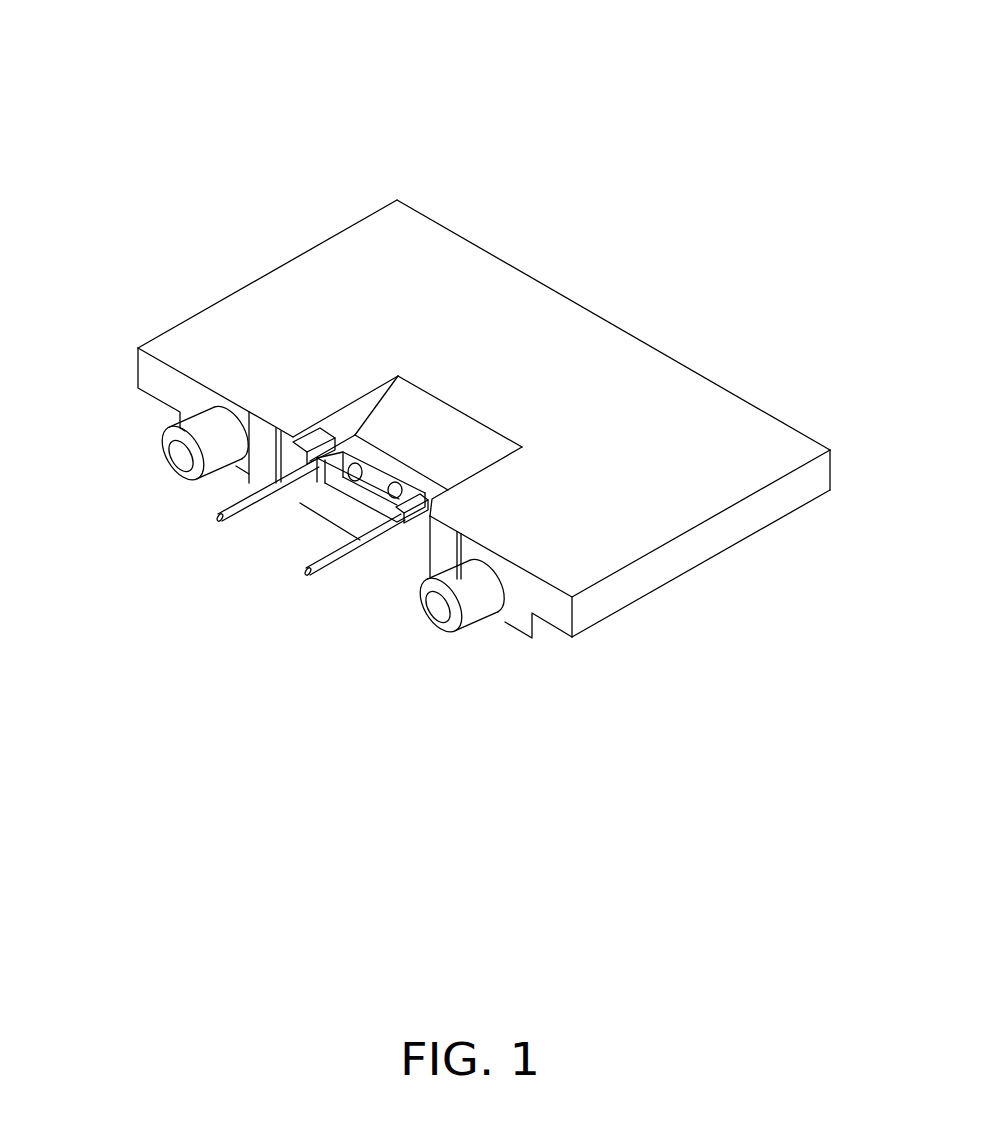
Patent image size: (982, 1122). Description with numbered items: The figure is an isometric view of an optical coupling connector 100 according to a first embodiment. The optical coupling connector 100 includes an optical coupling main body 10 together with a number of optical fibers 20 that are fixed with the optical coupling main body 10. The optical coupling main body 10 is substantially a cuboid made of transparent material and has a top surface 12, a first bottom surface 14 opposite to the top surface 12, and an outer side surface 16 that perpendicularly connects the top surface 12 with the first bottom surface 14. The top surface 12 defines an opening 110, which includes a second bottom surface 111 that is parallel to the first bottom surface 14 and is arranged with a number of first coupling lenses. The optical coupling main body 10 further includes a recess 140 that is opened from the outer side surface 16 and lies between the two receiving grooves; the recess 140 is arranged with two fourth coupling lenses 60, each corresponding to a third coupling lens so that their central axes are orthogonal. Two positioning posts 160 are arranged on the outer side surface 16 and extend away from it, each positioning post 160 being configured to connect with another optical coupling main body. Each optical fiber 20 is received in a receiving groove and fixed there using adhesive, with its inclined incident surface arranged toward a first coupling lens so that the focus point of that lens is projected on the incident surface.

The optical coupling connector 100 is at (487, 31).
The optical coupling main body 10 is at (248, 272).
The top surface 12 is at (602, 367).
The first bottom surface 14 is at (712, 558).
The outer side surface 16 is at (155, 378).
The opening 110 is at (420, 443).
The second bottom surface 111 is at (373, 447).
The recess 140 is at (362, 493).
The positioning post 160 is at (177, 455).
The optical fiber 20 is at (217, 513).
The fourth coupling lens 60 is at (277, 493).